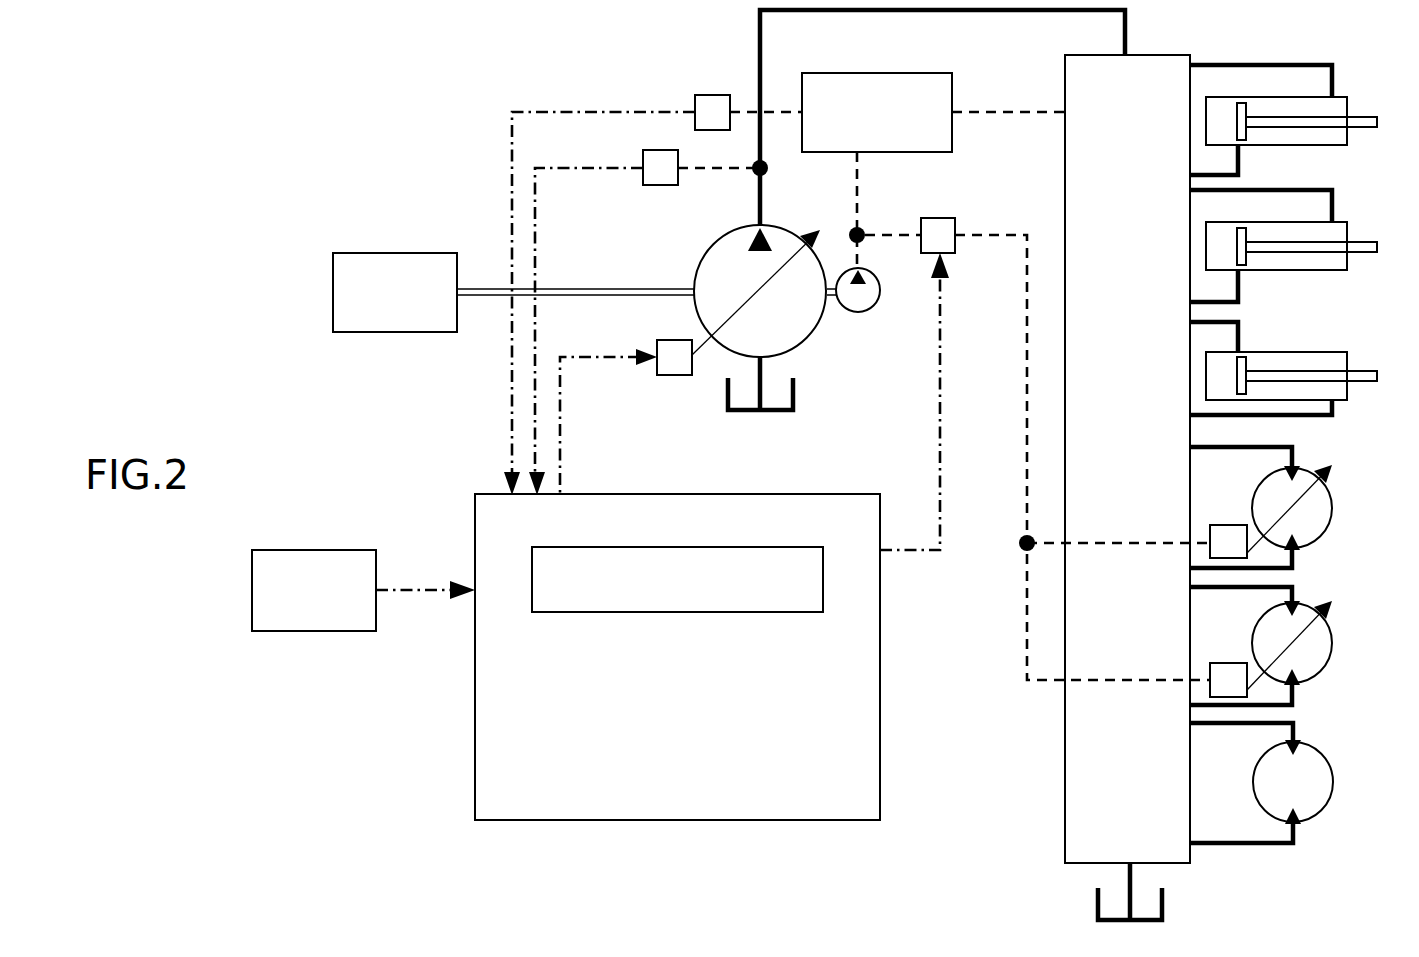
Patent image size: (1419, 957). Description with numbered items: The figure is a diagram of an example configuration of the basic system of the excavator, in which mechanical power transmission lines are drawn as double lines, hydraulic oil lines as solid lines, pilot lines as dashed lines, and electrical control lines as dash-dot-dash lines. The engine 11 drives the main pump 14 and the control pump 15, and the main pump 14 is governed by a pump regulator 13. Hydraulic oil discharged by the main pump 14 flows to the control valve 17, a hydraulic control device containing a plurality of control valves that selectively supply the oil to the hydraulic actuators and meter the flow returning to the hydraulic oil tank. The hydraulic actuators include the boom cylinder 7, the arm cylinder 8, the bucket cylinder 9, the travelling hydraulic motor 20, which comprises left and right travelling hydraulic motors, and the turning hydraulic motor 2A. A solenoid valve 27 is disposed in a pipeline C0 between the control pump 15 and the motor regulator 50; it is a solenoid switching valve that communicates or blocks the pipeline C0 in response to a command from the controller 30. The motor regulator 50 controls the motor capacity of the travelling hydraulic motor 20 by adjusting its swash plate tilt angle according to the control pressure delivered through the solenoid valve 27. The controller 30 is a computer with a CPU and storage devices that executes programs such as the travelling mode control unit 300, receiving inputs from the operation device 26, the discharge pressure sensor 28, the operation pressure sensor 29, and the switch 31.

The turning hydraulic motor 2A is at (1322, 750).
The boom cylinder 7 is at (1349, 103).
The arm cylinder 8 is at (1349, 228).
The bucket cylinder 9 is at (1349, 388).
The engine 11 is at (333, 285).
The pump regulator 13 is at (675, 375).
The main pump 14 is at (808, 335).
The control pump 15 is at (856, 312).
The control valve 17 is at (1153, 53).
The travelling hydraulic motor 20 is at (1334, 495).
The operation device 26 is at (914, 73).
The solenoid valve 27 is at (938, 218).
The discharge pressure sensor 28 is at (660, 185).
The operation pressure sensor 29 is at (712, 95).
The controller 30 is at (740, 494).
The travelling mode control unit 300 is at (765, 547).
The switch 31 is at (314, 550).
The motor regulator 50 is at (1219, 663).
The pipeline C0 is at (990, 234).